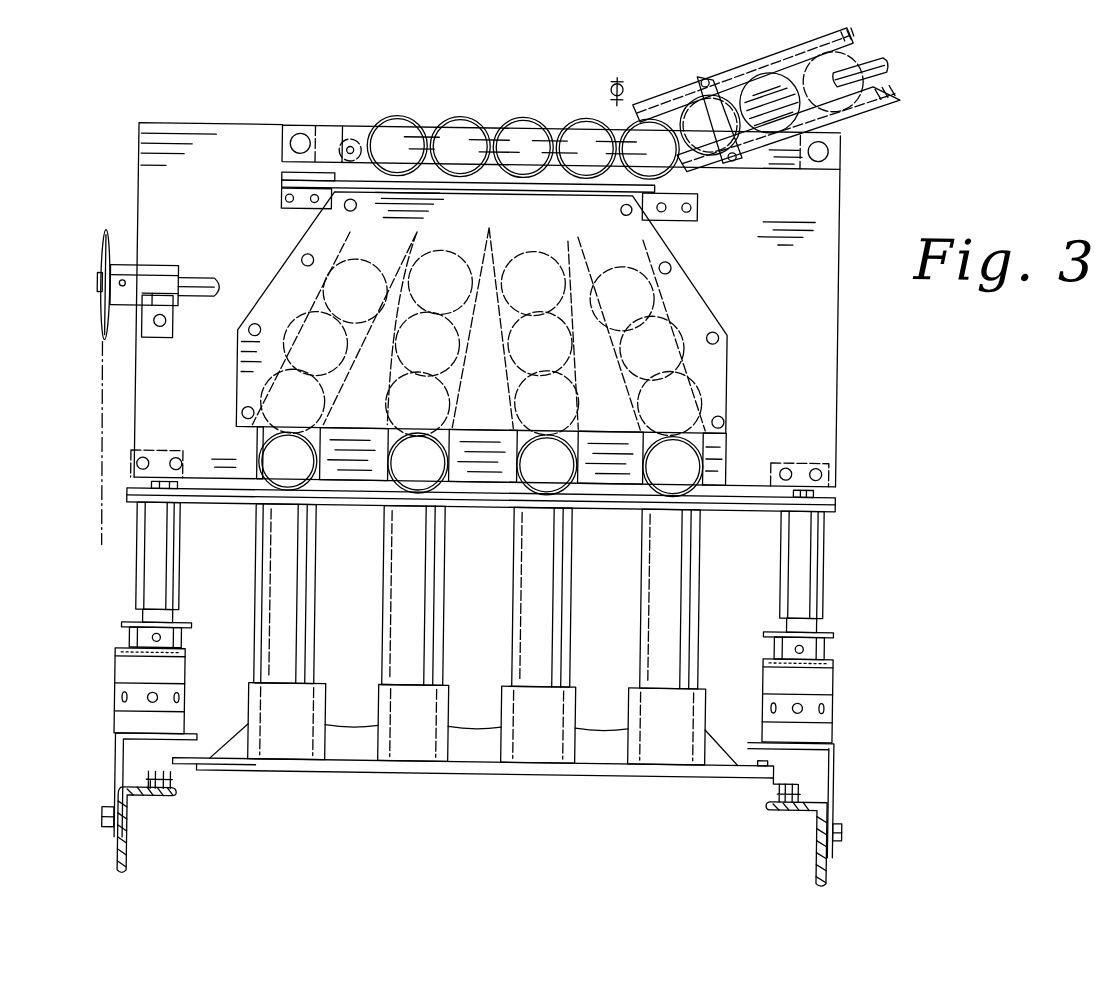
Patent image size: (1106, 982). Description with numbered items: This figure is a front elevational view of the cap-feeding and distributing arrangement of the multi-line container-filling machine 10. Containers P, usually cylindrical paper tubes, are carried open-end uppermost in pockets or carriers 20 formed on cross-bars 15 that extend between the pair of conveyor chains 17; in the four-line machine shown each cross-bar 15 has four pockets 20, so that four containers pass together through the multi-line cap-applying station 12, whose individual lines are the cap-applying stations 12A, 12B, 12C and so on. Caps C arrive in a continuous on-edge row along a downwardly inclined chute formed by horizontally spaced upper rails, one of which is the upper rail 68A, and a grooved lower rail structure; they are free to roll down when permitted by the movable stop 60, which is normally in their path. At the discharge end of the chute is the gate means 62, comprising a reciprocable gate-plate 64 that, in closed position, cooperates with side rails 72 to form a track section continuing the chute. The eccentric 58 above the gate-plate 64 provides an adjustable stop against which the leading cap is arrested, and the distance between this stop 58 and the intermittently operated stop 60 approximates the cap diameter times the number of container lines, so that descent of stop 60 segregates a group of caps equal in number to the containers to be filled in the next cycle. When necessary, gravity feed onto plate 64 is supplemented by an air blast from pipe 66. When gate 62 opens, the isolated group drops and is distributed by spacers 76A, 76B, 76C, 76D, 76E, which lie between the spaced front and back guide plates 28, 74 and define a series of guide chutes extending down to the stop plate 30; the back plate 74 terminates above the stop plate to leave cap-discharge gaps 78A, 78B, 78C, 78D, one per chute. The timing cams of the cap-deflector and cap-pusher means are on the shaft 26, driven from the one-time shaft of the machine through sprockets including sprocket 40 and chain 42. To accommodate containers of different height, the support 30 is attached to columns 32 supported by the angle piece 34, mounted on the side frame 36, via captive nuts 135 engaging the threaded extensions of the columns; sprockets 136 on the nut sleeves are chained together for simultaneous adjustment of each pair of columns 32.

The container-filling machine 10 is at (640, 72).
The cap-applying station 12 is at (778, 333).
The cap-applying station 12A is at (323, 346).
The cap-applying station 12B is at (443, 344).
The cap-applying station 12C is at (601, 344).
The cross-bar 15 is at (430, 776).
The conveyor chain 17 is at (162, 778).
The pocket 20 is at (376, 690).
The shaft 26 is at (200, 284).
The front guide plate 28 is at (140, 190).
The stop plate 30 is at (748, 508).
The column 32 is at (181, 546).
The angle piece 34 is at (121, 770).
The side frame 36 is at (134, 866).
The sprocket 40 is at (100, 246).
The chain 42 is at (103, 442).
The eccentric 58 is at (344, 146).
The movable stop 60 is at (608, 80).
The gate means 62 is at (262, 187).
The gate-plate 64 is at (312, 212).
The pipe 66 is at (884, 60).
The upper rail 68A is at (692, 88).
The side rail 72 is at (718, 182).
The back guide plate 74 is at (694, 289).
The spacer 76A is at (340, 242).
The spacer 76B is at (437, 236).
The spacer 76C is at (490, 232).
The spacer 76D is at (568, 256).
The spacer 76E is at (608, 241).
The cap-discharge gap 78A is at (300, 490).
The cap-discharge gap 78B is at (430, 490).
The cap-discharge gap 78C is at (556, 490).
The cap-discharge gap 78D is at (688, 490).
The captive nut 135 is at (118, 695).
The sprocket 136 is at (124, 630).
The cap C is at (398, 120).
The container P is at (319, 599).